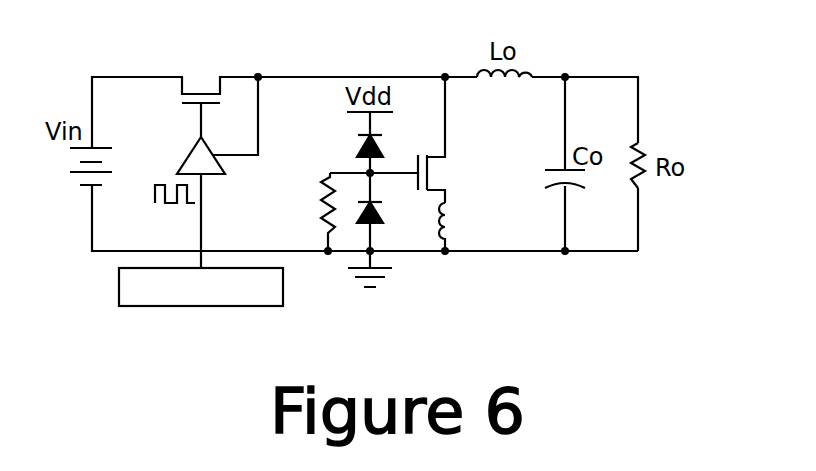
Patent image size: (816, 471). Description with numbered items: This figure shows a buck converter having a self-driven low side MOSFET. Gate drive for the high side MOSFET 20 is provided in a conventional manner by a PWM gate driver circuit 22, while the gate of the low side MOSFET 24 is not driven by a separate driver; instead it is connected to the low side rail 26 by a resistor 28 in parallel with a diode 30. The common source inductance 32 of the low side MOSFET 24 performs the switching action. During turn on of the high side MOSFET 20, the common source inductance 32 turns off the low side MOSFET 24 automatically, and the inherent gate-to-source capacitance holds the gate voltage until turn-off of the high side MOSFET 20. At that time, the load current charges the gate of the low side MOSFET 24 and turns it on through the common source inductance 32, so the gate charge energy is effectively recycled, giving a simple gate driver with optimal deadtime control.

The high side MOSFET 20 is at (182, 88).
The PWM gate driver circuit 22 is at (119, 282).
The low side MOSFET 24 is at (436, 152).
The low side rail 26 is at (512, 252).
The resistor 28 is at (318, 192).
The diode 30 is at (383, 212).
The common source inductance 32 is at (455, 212).